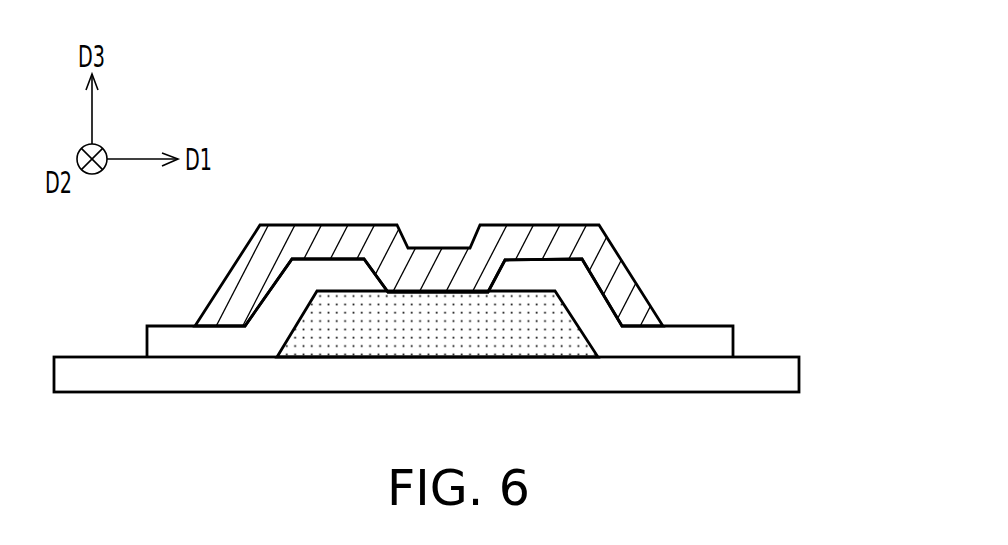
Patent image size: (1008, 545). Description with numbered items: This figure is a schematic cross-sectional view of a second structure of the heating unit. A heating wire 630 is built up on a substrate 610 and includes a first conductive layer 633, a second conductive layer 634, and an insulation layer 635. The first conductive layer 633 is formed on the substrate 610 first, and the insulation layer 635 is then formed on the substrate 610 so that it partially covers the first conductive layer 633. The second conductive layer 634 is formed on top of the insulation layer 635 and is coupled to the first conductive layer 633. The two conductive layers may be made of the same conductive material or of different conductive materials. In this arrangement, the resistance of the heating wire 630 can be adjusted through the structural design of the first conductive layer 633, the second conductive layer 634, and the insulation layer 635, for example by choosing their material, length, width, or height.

The substrate 610 is at (790, 373).
The heating wire 630 is at (385, 256).
The first conductive layer 633 is at (562, 333).
The second conductive layer 634 is at (558, 235).
The insulation layer 635 is at (572, 280).